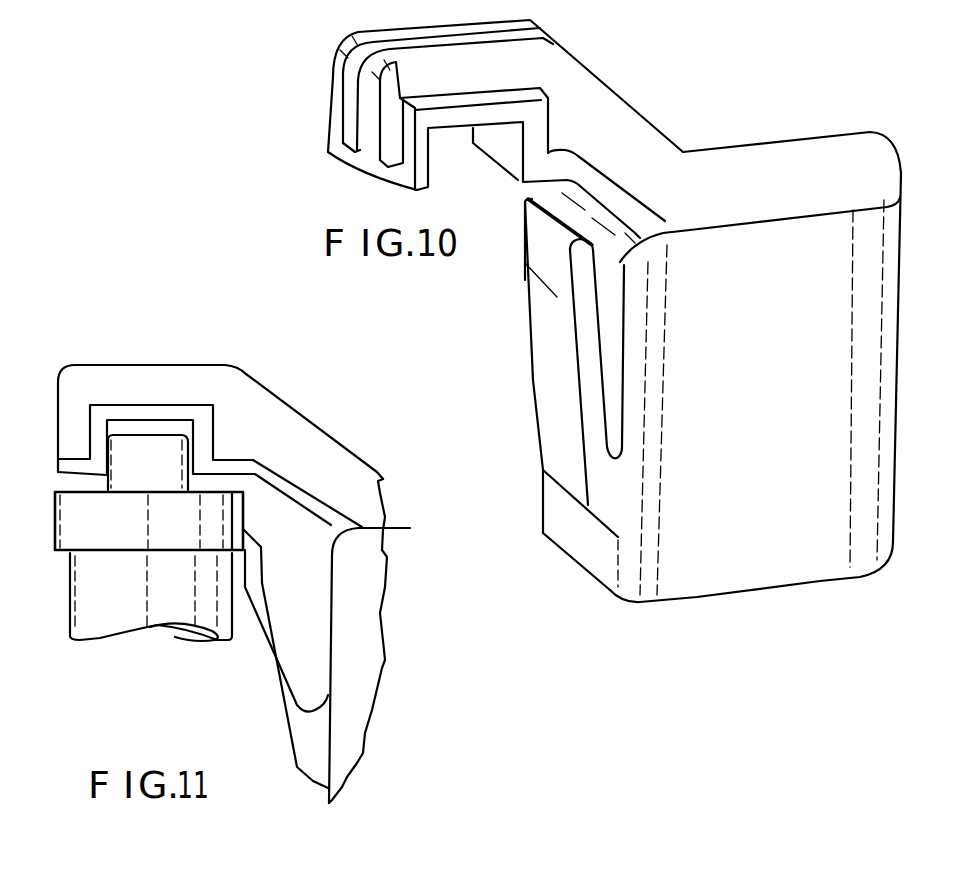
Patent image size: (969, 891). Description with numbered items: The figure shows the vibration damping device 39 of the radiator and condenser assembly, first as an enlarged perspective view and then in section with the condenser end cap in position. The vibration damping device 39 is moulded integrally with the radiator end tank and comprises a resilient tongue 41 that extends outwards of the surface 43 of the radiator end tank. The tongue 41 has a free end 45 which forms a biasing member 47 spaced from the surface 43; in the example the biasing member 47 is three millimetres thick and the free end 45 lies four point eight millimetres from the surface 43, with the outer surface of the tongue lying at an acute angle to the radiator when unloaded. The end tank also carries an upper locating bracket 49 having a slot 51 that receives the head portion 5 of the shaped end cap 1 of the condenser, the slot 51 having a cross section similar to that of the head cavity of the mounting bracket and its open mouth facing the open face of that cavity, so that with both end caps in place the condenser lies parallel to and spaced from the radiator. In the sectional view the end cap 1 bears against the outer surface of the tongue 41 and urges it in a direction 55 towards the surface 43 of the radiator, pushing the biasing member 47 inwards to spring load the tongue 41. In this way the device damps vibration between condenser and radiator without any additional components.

In FIG. 11, the end cap 1 is at (78, 531).
In FIG. 11, the head portion 5 is at (120, 472).
In FIG. 10, the vibration damping device 39 is at (632, 514).
In FIG. 10, the resilient tongue 41 is at (551, 390).
In FIG. 11, the resilient tongue 41 is at (272, 690).
In FIG. 10, the surface of the radiator 43 is at (578, 535).
In FIG. 10, the free end 45 is at (541, 307).
In FIG. 10, the biasing member 47 is at (545, 360).
In FIG. 11, the upper locating bracket 49 is at (182, 387).
In FIG. 11, the slot 51 is at (103, 415).
In FIG. 11, the direction 55 is at (308, 578).